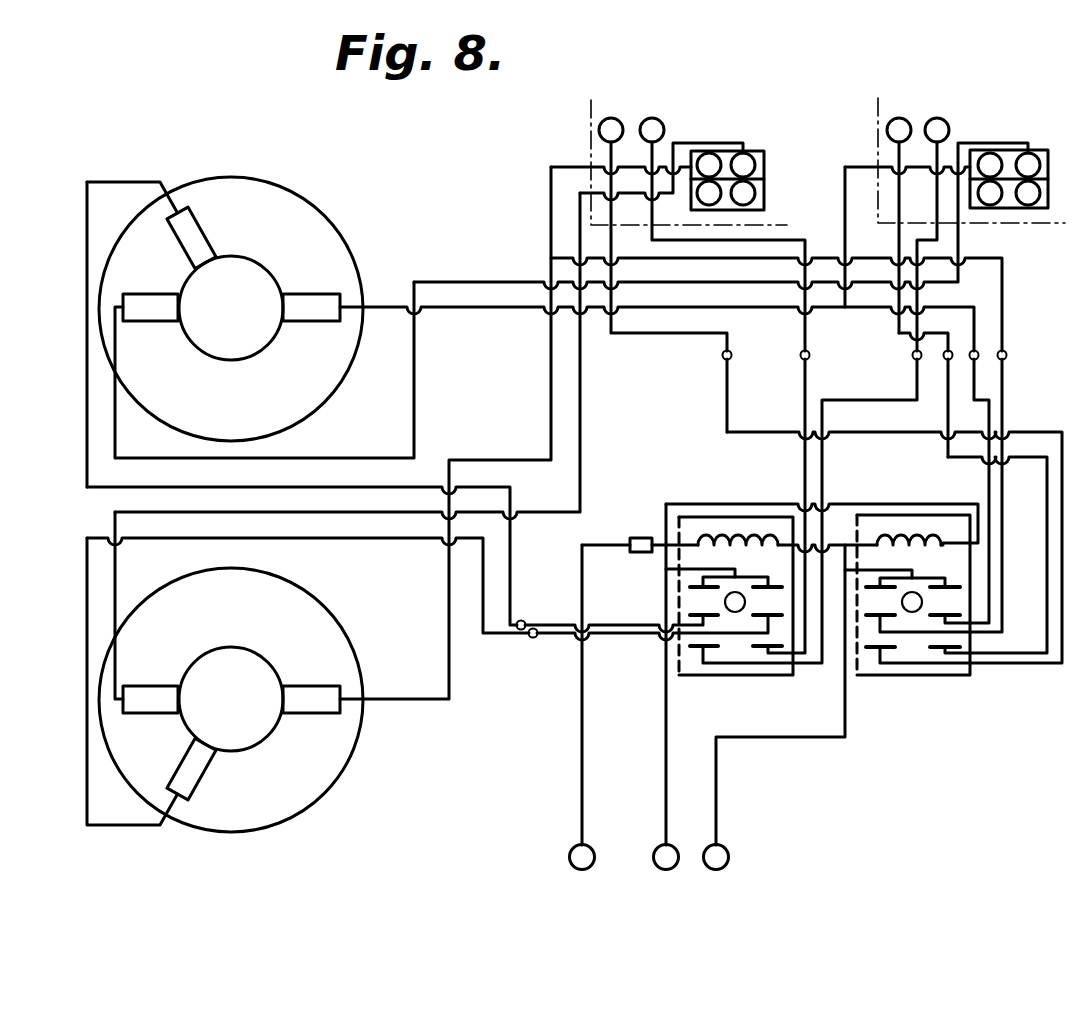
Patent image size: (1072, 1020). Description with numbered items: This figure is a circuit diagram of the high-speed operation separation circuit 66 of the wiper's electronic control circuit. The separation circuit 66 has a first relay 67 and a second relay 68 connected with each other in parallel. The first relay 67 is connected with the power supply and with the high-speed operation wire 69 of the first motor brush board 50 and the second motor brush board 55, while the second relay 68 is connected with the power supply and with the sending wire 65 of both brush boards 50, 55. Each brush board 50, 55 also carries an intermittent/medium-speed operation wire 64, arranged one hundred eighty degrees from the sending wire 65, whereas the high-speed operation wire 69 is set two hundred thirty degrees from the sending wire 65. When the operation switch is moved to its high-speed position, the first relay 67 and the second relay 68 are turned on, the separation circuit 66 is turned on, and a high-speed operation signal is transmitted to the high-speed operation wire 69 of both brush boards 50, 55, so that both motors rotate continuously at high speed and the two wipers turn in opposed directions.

The first motor brush board 50 is at (217, 173).
The second motor brush board 55 is at (287, 818).
The intermittent/medium-speed operation wire 64 is at (113, 340).
The sending wire 65 is at (382, 303).
The high-speed operation separation circuit 66 is at (707, 498).
The first relay 67 is at (712, 678).
The second relay 68 is at (920, 677).
The high-speed operation wire 69 is at (122, 180).